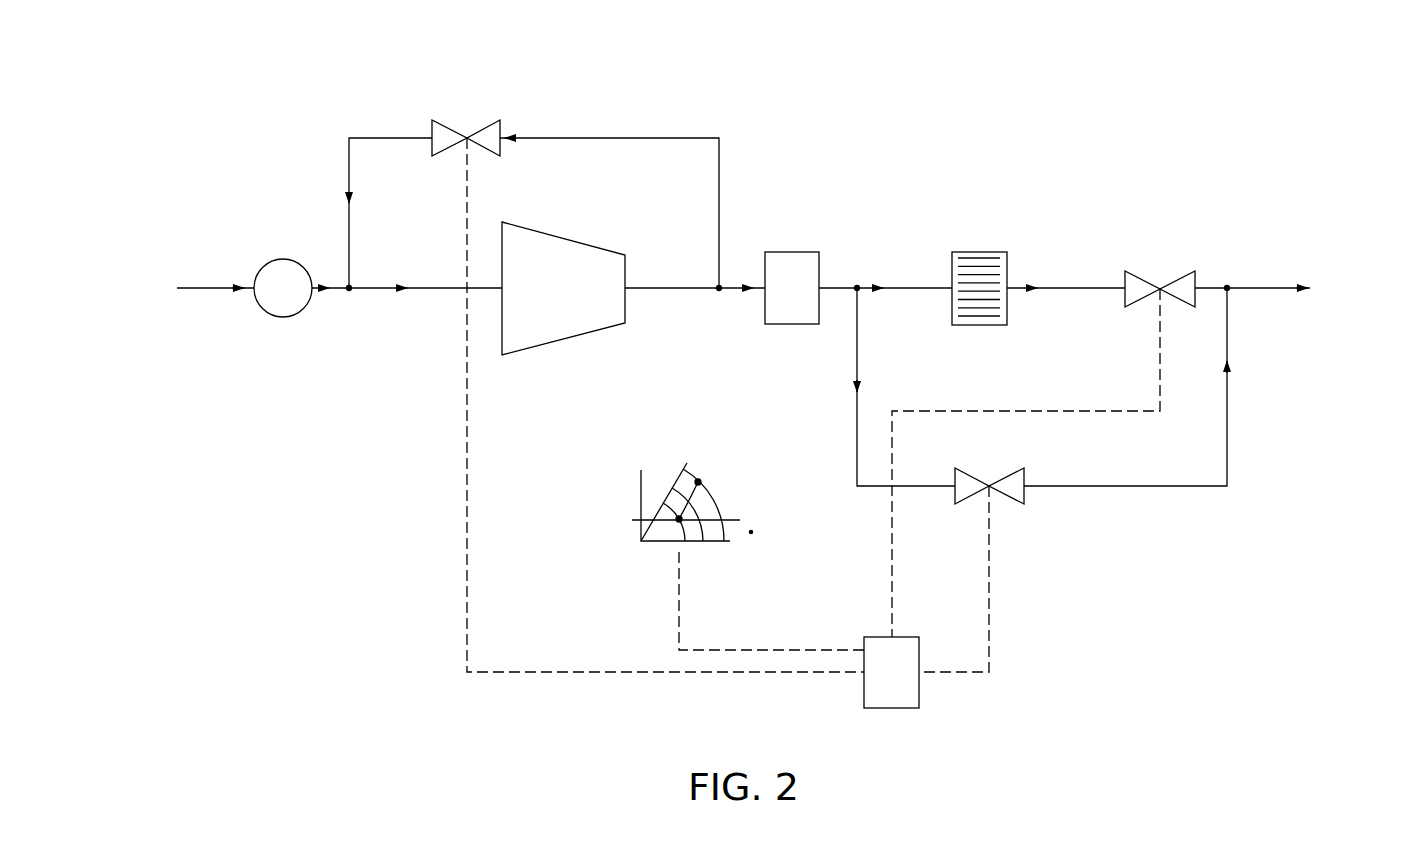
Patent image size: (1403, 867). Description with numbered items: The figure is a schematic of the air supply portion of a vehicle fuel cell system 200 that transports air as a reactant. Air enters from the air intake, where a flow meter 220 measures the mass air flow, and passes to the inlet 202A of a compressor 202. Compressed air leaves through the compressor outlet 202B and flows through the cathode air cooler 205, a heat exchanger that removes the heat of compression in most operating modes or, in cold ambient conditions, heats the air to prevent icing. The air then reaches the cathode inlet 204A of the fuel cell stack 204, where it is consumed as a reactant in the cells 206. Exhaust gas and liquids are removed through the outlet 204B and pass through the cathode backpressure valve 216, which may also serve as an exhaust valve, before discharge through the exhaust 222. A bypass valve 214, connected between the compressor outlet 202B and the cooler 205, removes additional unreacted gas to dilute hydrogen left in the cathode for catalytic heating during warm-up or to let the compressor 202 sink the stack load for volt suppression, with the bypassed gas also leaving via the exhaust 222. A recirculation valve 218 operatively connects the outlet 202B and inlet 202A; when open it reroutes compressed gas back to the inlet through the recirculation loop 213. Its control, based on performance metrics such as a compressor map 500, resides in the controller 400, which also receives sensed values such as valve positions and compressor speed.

The fuel cell system 200 is at (276, 122).
The compressor 202 is at (565, 238).
The inlet of compressor 202A is at (408, 285).
The outlet of compressor 202B is at (658, 286).
The fuel cell stack 204 is at (975, 252).
The cathode inlet 204A is at (880, 285).
The outlet 204B is at (1035, 285).
The cathode air cooler 205 is at (786, 252).
The cells 206 is at (979, 315).
The recirculation loop 213 is at (350, 209).
The bypass valve 214 is at (1022, 500).
The cathode backpressure valve 216 is at (1174, 278).
The recirculation valve 218 is at (468, 120).
The flow meter 220 is at (282, 258).
The exhaust 222 is at (1257, 286).
The controller 400 is at (919, 693).
The compressor map 500 is at (607, 525).